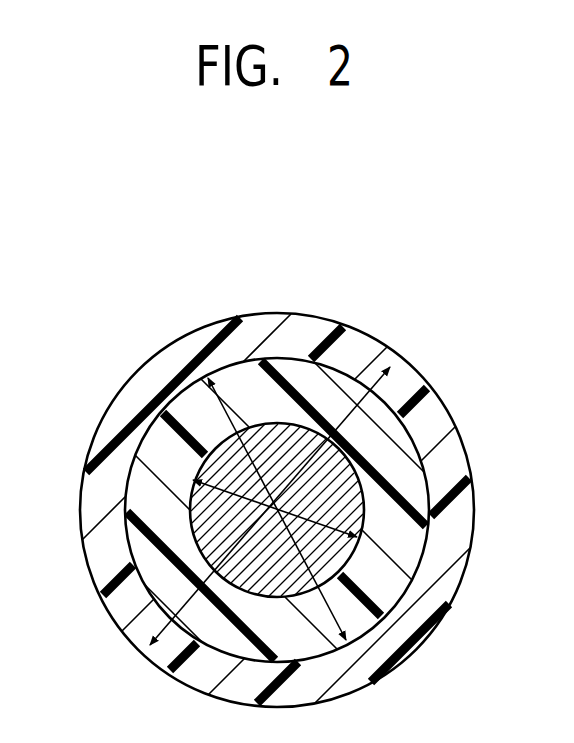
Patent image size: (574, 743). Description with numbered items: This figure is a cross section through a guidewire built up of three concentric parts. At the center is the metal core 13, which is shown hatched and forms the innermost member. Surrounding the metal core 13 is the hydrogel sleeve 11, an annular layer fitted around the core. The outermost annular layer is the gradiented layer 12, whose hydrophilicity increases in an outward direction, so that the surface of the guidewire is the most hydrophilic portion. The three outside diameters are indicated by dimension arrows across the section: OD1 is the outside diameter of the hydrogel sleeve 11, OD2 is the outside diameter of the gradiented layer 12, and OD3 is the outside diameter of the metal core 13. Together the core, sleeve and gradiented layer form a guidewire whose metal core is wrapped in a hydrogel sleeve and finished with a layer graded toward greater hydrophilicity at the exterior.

The hydrogel sleeve 11 is at (253, 377).
The gradiented layer 12 is at (357, 347).
The metal core 13 is at (343, 503).
The outside diameter of the hydrogel sleeve OD1 is at (222, 408).
The outside diameter of the gradiented layer OD2 is at (289, 357).
The outside diameter of the metal core OD3 is at (192, 512).